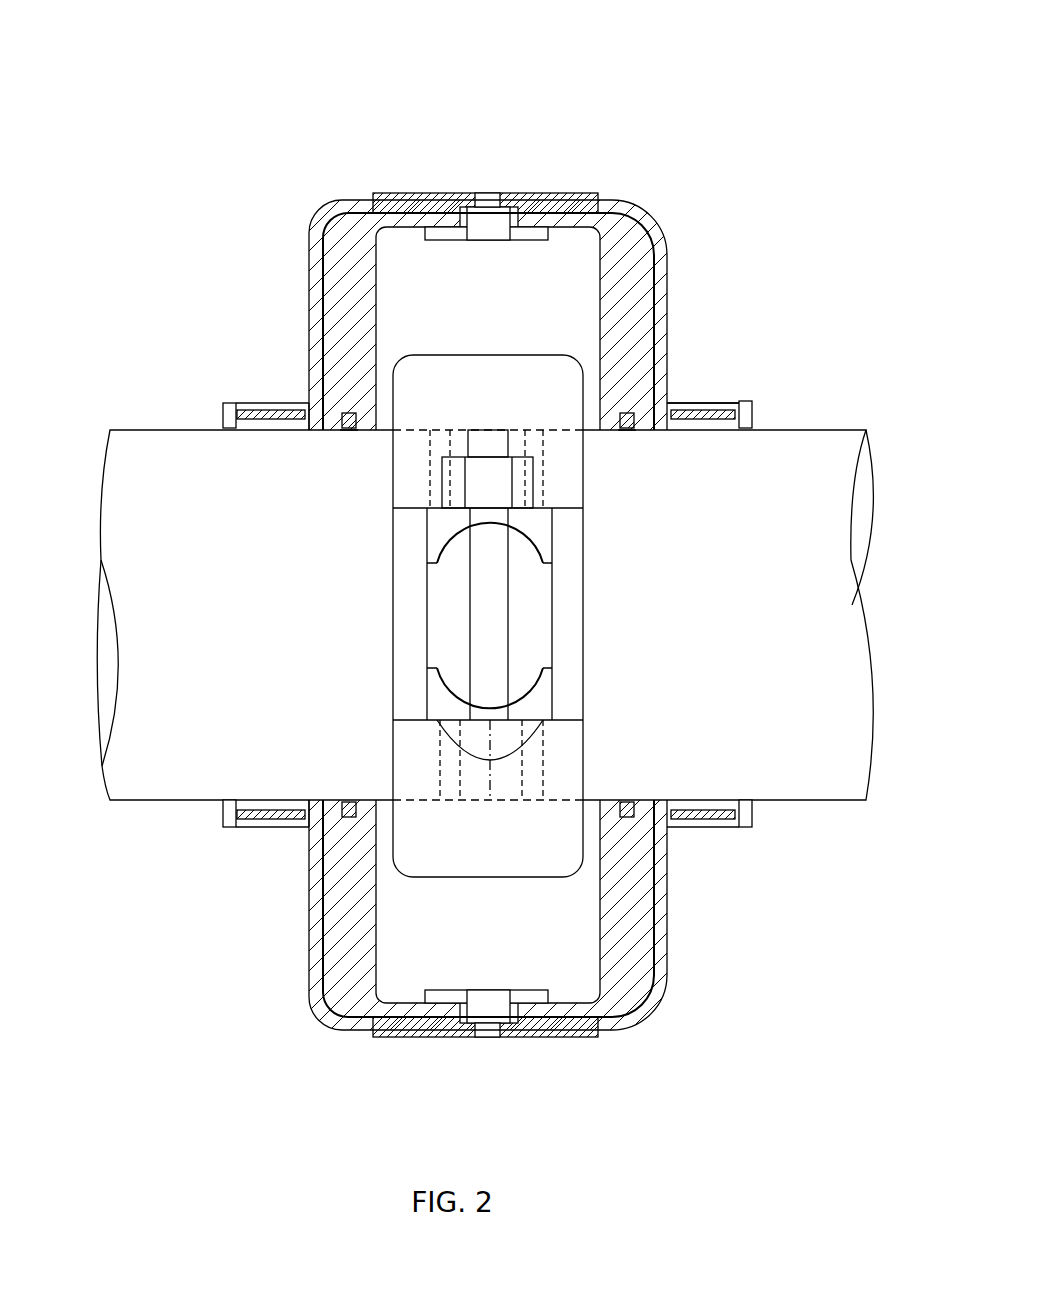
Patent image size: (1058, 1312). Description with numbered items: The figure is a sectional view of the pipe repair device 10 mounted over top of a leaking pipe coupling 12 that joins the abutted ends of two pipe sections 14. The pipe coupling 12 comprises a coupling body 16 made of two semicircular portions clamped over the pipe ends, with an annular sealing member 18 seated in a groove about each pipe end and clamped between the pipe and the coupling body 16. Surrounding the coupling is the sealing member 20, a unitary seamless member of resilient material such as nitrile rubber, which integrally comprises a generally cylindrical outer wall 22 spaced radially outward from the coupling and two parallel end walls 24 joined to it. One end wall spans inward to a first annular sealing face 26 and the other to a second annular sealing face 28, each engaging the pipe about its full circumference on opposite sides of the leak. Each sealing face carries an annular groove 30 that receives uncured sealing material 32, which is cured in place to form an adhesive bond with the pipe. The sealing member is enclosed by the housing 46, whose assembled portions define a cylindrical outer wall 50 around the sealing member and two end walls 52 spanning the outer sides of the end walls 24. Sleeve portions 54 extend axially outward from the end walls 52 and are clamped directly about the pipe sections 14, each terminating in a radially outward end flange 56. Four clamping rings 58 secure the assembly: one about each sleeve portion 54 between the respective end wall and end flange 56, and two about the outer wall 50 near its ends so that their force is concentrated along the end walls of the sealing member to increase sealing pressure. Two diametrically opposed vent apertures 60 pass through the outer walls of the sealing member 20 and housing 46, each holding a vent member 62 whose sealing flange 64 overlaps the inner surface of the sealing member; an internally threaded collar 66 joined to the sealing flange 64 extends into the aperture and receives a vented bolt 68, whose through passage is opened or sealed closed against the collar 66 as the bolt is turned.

The pipe repair device 10 is at (256, 267).
The pipe coupling 12 is at (535, 352).
The pipe sections 14 is at (132, 428).
The coupling body 16 is at (537, 877).
The annular sealing member 18 is at (440, 780).
The sealing member 20 is at (583, 270).
The outer wall 22 is at (395, 227).
The end walls 24 is at (352, 255).
The first annular sealing face 26 is at (656, 412).
The second annular sealing face 28 is at (322, 420).
The annular groove 30 is at (345, 414).
The sealing material 32 is at (348, 432).
The housing 46 is at (647, 202).
The outer wall 50 is at (415, 210).
The end walls 52 is at (667, 277).
The sleeve portions 54 is at (258, 802).
The end flange 56 is at (228, 402).
The clamping rings 58 is at (258, 838).
The vent apertures 60 is at (462, 215).
The vent member 62 is at (500, 155).
The sealing flange 64 is at (448, 245).
The internally threaded collar 66 is at (500, 213).
The vented bolt 68 is at (486, 228).